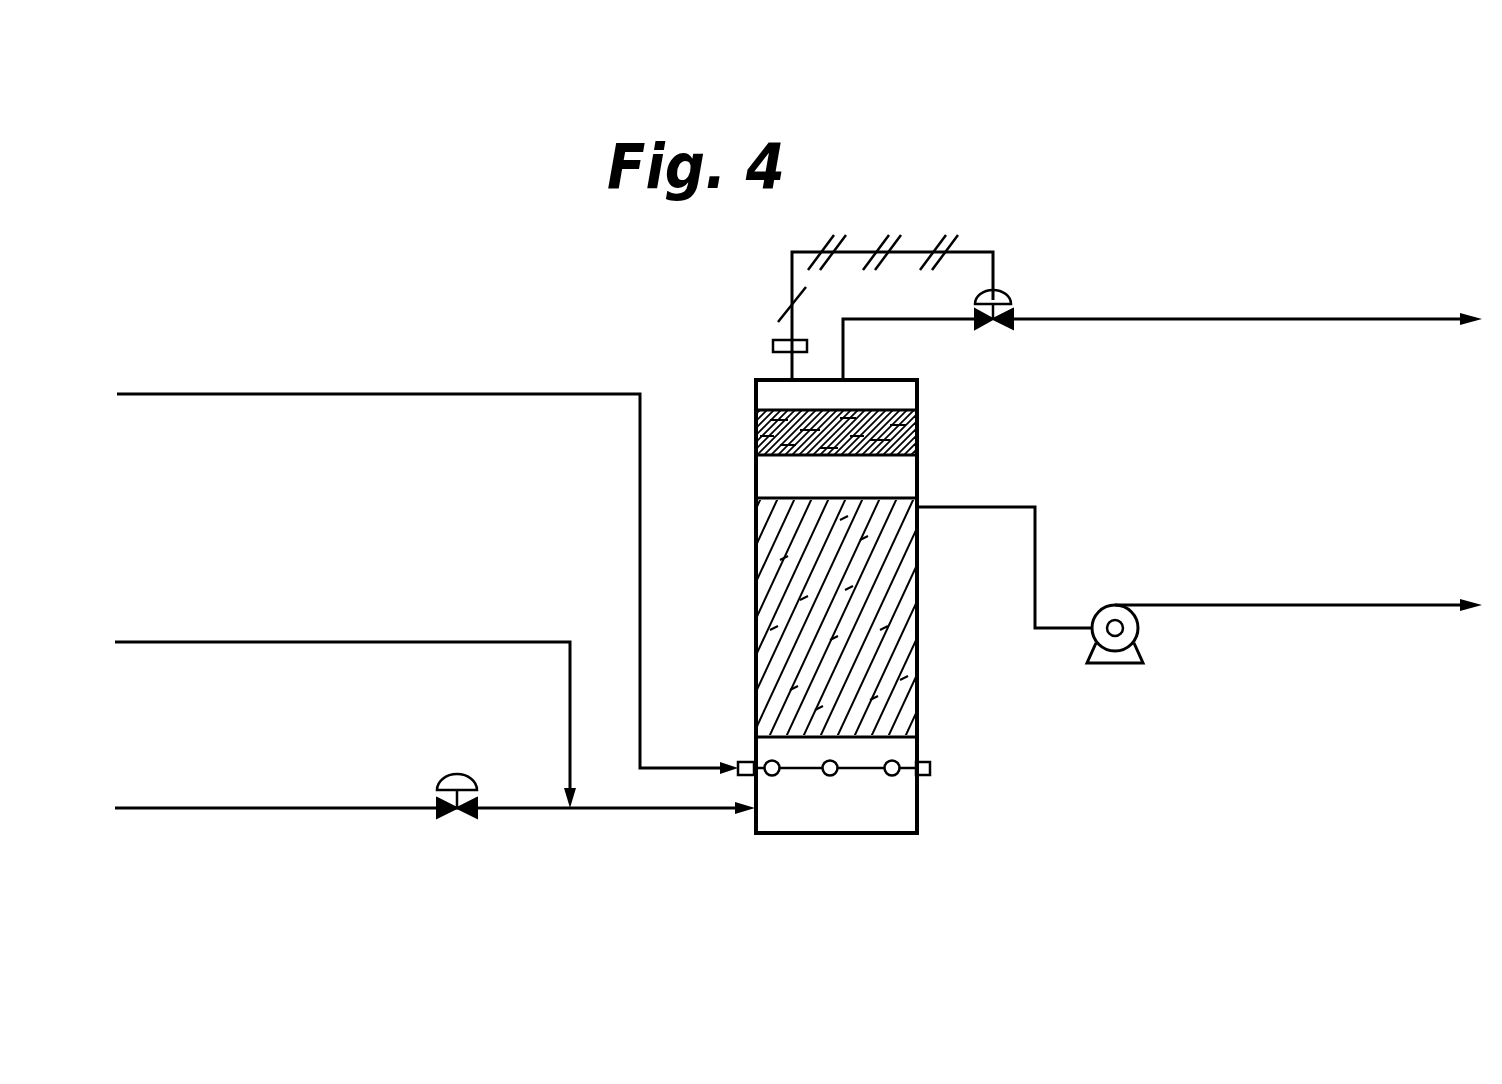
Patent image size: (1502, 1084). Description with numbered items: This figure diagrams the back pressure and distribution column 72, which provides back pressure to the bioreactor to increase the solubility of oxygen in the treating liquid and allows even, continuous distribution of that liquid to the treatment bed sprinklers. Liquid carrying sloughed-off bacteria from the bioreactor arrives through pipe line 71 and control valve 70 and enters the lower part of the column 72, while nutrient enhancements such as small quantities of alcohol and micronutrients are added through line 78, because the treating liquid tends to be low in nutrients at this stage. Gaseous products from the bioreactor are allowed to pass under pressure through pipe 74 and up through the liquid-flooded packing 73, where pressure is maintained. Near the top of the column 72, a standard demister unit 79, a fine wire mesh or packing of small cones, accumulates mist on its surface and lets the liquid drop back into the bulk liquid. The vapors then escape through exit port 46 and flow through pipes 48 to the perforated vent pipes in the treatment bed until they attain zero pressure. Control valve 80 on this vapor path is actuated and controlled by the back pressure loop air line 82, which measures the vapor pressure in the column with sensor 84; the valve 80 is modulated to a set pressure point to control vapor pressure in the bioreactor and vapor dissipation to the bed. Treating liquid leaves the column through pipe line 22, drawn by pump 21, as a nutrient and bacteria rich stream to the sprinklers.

The pump 21 is at (1130, 635).
The pipe line 22 is at (1035, 560).
The exit port 46 is at (843, 365).
The pipes 48 is at (1040, 319).
The control valve 70 is at (447, 820).
The pipe line 71 is at (665, 810).
The back pressure and distribution column 72 is at (756, 553).
The packing 73 is at (890, 660).
The pipe 74 is at (500, 394).
The line 78 is at (500, 642).
The demister unit 79 is at (917, 425).
The control valve 80 is at (1000, 326).
The back pressure loop air line 82 is at (792, 262).
The sensor 84 is at (780, 340).